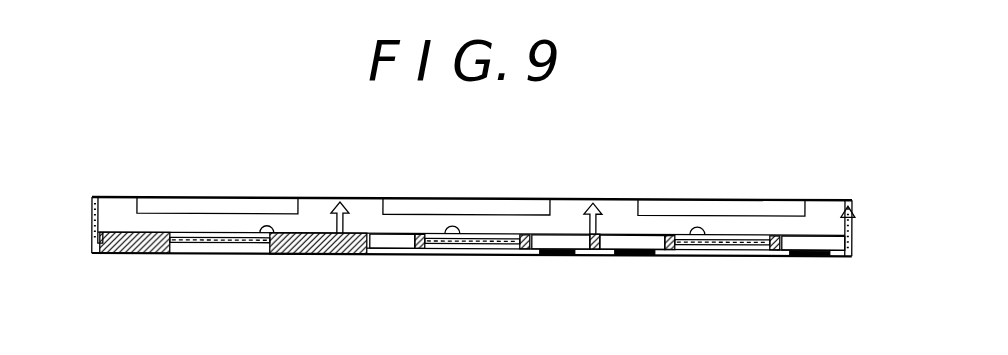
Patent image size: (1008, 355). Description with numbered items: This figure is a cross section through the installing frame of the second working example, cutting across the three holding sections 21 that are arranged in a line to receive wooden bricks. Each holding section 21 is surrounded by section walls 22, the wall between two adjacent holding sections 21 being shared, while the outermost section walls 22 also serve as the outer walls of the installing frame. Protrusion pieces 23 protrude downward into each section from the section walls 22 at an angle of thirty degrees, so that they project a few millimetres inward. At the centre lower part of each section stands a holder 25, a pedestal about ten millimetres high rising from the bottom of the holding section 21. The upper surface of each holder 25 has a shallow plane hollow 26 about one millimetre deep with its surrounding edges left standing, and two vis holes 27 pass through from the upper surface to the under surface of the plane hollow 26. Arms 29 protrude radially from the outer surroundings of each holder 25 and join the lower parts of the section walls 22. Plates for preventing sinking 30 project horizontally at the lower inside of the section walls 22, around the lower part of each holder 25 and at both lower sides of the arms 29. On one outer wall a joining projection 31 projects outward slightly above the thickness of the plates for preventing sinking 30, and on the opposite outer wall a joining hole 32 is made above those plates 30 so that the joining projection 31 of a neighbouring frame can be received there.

The holding section 21 is at (319, 197).
The section wall 22 is at (92, 214).
The protrusion piece 23 is at (101, 199).
The holder 25 is at (188, 231).
The plane hollow 26 is at (268, 238).
The vis hole 27 is at (235, 250).
The arm 29 is at (140, 252).
The plate for preventing sinking 30 is at (591, 251).
The joining projection 31 is at (858, 258).
The joining hole 32 is at (93, 255).